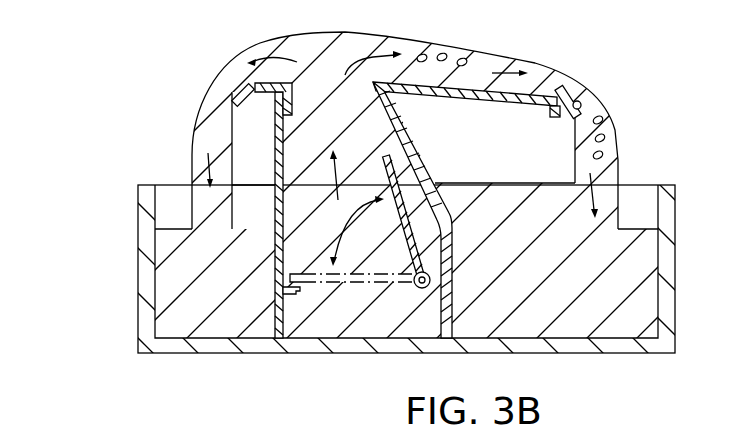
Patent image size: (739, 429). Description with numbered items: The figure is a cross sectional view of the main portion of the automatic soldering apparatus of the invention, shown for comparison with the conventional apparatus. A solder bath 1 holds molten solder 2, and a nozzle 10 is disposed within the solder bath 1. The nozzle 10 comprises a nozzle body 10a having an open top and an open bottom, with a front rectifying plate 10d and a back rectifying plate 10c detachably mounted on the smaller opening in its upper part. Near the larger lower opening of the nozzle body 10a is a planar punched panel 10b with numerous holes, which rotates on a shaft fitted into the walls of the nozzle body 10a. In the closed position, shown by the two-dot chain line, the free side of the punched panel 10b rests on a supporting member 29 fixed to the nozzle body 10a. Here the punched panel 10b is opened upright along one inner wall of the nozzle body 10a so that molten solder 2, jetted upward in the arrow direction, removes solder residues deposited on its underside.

The solder bath 1 is at (665, 252).
The molten solder 2 is at (623, 240).
The nozzle 10 is at (453, 144).
The nozzle body 10a is at (422, 171).
The punched panel 10b is at (410, 223).
The back rectifying plate 10c is at (488, 90).
The front rectifying plate 10d is at (250, 92).
The supporting member 29 is at (294, 297).